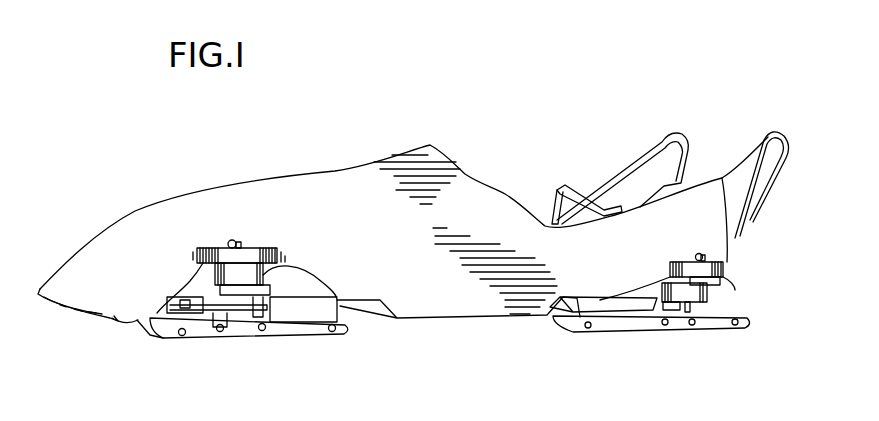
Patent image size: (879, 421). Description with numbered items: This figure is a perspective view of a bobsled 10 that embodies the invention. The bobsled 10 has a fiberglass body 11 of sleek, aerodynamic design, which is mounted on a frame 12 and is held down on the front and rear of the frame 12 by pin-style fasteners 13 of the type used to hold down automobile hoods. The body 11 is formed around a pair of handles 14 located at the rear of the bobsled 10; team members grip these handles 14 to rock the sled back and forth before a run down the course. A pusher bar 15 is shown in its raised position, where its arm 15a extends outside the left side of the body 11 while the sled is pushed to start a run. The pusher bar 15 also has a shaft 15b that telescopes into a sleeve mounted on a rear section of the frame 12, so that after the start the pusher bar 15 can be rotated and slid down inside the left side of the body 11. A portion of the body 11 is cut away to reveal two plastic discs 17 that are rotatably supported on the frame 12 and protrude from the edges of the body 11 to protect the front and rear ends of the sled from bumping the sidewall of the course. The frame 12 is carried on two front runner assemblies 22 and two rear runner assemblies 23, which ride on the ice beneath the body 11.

The bobsled 10 is at (487, 74).
The fiberglass body 11 is at (193, 205).
The frame 12 is at (307, 311).
The pin-style fasteners 13 is at (233, 242).
The handles 14 is at (763, 135).
The pusher bar 15 is at (577, 188).
The arm 15a is at (583, 220).
The shaft 15b is at (555, 207).
The plastic discs 17 is at (260, 280).
The front runner assemblies 22 is at (233, 343).
The rear runner assemblies 23 is at (647, 334).